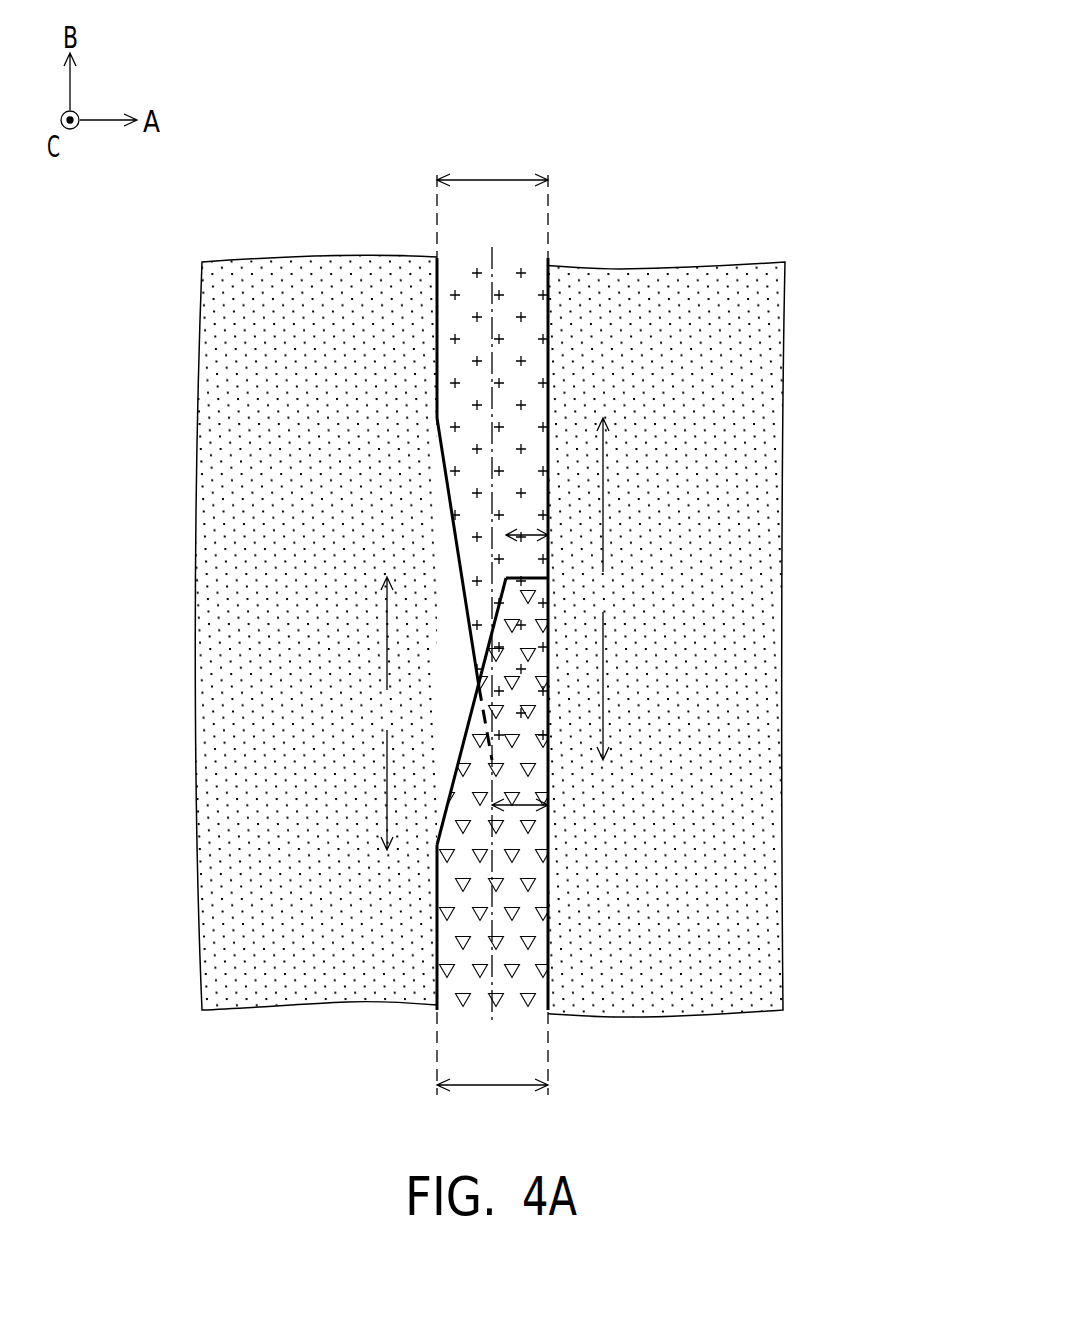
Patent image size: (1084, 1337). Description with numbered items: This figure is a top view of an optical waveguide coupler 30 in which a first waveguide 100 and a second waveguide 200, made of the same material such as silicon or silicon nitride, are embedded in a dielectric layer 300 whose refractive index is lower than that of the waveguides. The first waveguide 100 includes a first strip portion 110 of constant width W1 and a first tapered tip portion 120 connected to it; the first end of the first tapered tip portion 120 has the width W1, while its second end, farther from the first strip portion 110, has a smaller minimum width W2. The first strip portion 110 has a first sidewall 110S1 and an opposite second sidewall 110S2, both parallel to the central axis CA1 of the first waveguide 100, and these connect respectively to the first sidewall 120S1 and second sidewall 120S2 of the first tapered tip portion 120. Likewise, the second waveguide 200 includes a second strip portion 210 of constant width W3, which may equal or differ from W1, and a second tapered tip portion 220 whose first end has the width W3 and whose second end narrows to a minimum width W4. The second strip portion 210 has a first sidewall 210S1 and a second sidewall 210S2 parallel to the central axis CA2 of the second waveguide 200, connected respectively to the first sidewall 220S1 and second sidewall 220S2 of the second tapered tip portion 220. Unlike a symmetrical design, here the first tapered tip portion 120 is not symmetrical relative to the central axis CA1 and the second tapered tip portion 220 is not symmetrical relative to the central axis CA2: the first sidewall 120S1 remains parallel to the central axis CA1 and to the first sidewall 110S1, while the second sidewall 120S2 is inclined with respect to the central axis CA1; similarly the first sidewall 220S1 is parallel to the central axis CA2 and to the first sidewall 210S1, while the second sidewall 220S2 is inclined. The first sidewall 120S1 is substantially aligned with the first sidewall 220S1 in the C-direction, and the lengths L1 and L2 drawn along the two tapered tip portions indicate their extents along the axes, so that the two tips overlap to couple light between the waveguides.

The optical waveguide coupler 30 is at (772, 250).
The dielectric layer 300 is at (768, 946).
The first waveguide 100 is at (753, 30).
The first strip portion 110 is at (356, 1002).
The first tapered tip portion 120 is at (356, 850).
The second waveguide 200 is at (906, 30).
The second strip portion 210 is at (548, 418).
The second tapered tip portion 220 is at (492, 760).
The first sidewall of the first strip portion 110S1 is at (563, 976).
The second sidewall of the first strip portion 110S2 is at (424, 976).
The first sidewall of the first tapered tip portion 120S1 is at (565, 841).
The second sidewall of the first tapered tip portion 120S2 is at (435, 807).
The first sidewall of the second strip portion 210S1 is at (563, 308).
The second sidewall of the second strip portion 210S2 is at (424, 306).
The first sidewall of the second tapered tip portion 220S1 is at (565, 476).
The second sidewall of the second tapered tip portion 220S2 is at (441, 543).
The central axis of the first waveguide CA1 is at (493, 1018).
The central axis of the second waveguide CA2 is at (492, 247).
The width of the first strip portion W1 is at (492, 1068).
The width of the second end of the first tapered tip portion W2 is at (527, 520).
The width of the second strip portion W3 is at (492, 201).
The width of the second end of the second tapered tip portion W4 is at (520, 790).
The length of second via portion L1 is at (387, 713).
The length of fourth via portion L2 is at (606, 589).